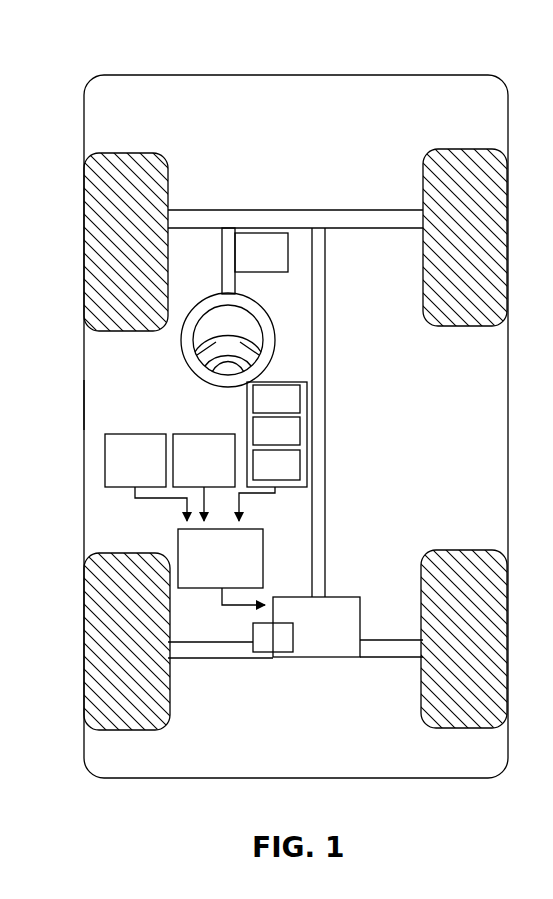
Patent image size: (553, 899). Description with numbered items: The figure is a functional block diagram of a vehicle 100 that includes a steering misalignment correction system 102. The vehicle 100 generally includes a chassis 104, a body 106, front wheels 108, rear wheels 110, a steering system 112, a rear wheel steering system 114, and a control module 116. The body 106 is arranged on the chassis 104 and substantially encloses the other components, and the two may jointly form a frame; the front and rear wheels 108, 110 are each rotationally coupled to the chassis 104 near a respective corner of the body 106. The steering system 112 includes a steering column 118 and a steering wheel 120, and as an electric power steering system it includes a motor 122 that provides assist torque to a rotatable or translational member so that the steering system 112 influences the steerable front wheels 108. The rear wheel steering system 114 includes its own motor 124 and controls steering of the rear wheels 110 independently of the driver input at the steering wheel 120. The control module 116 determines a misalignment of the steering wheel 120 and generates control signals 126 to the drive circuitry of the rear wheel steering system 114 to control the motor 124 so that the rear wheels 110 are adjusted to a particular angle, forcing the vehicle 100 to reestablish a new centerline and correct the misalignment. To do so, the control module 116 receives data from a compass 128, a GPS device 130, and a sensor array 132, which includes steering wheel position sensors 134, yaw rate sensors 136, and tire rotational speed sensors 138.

The vehicle 100 is at (314, 75).
The steering misalignment correction system 102 is at (450, 456).
The chassis 104 is at (325, 432).
The body 106 is at (84, 412).
The front wheels 108 is at (128, 160).
The rear wheels 110 is at (126, 553).
The steering system 112 is at (226, 190).
The rear wheel steering system 114 is at (295, 627).
The control module 116 is at (220, 558).
The steering column 118 is at (222, 285).
The steering wheel 120 is at (195, 378).
The motor 122 is at (261, 252).
The motor 124 is at (273, 637).
The control signals 126 is at (222, 610).
The compass 128 is at (146, 477).
The global positioning system (GPS) device 130 is at (204, 477).
The sensor array 132 is at (247, 410).
The steering wheel position sensors 134 is at (276, 399).
The yaw rate sensors 136 is at (276, 431).
The tire rotational speed sensors 138 is at (276, 465).